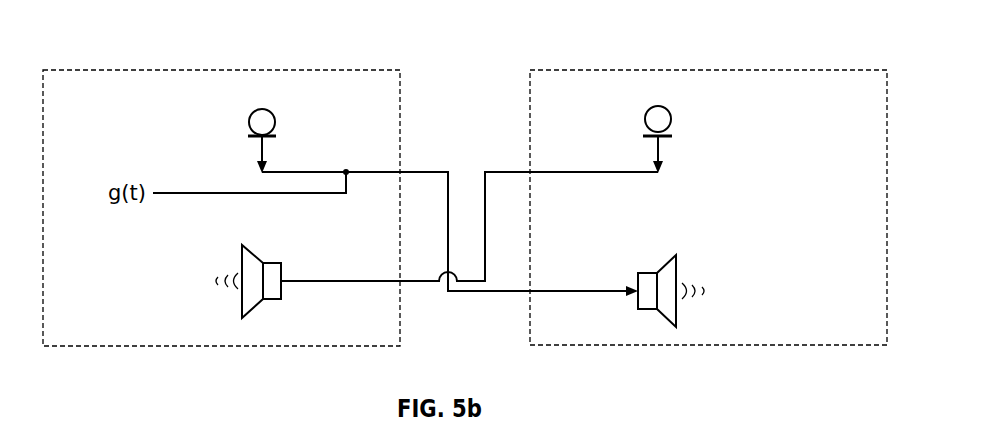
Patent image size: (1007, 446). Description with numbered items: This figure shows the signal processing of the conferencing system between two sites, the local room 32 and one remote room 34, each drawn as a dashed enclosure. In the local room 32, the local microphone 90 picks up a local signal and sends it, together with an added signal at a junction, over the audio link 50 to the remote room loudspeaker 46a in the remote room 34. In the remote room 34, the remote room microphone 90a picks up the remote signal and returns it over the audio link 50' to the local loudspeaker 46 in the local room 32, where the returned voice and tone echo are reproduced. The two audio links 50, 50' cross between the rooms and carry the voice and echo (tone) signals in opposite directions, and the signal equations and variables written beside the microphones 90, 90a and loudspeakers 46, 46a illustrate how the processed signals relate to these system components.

The local room 32 is at (97, 70).
The remote room 34 is at (585, 70).
The local loudspeaker 46 is at (264, 263).
The remote room loudspeaker 46a is at (652, 273).
The audio link 50 is at (450, 207).
The audio link 50' is at (469, 256).
The local microphone 90 is at (262, 108).
The remote room microphone 90a is at (658, 105).